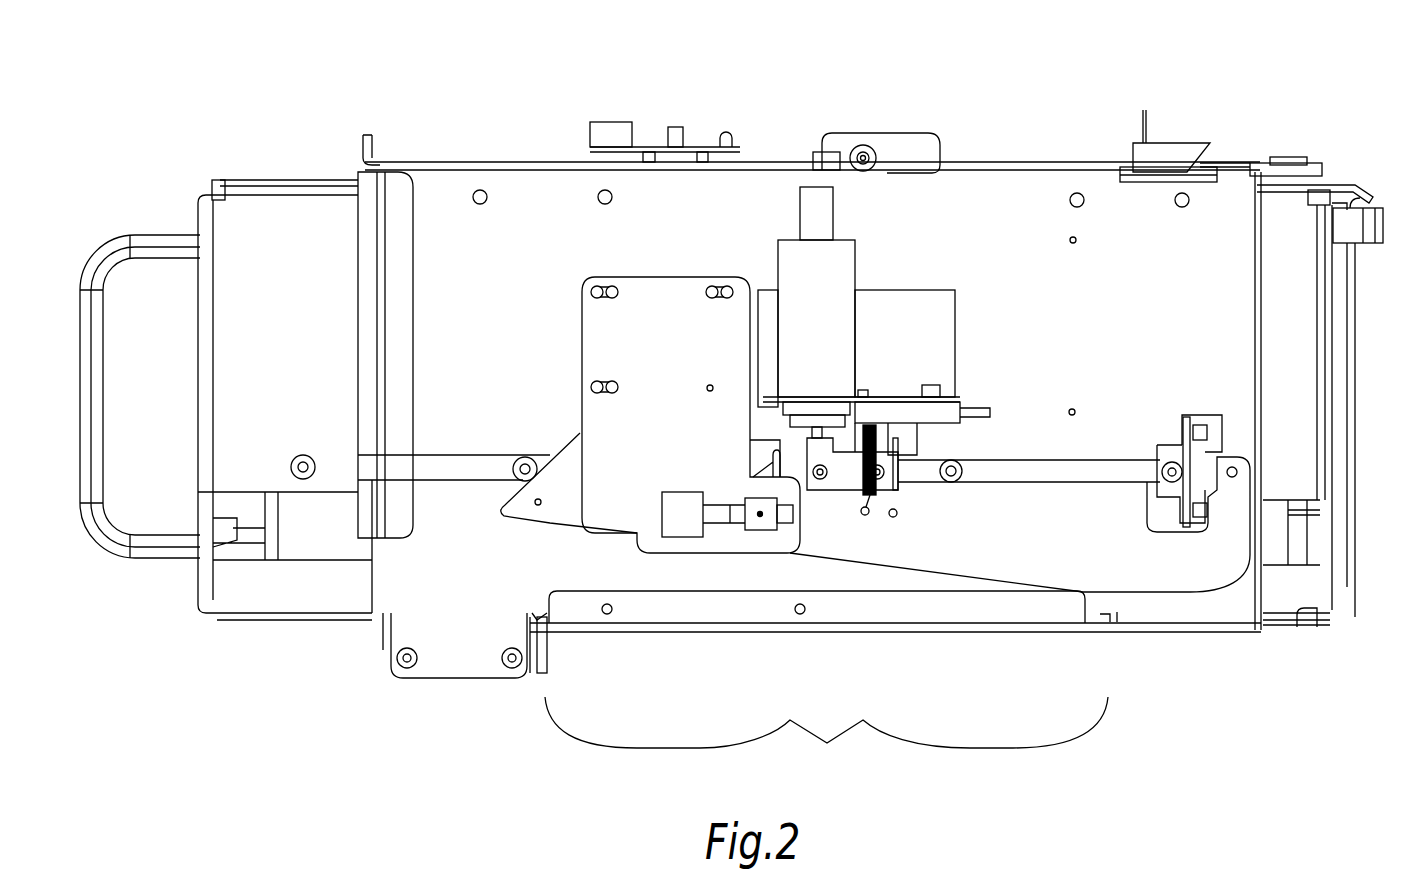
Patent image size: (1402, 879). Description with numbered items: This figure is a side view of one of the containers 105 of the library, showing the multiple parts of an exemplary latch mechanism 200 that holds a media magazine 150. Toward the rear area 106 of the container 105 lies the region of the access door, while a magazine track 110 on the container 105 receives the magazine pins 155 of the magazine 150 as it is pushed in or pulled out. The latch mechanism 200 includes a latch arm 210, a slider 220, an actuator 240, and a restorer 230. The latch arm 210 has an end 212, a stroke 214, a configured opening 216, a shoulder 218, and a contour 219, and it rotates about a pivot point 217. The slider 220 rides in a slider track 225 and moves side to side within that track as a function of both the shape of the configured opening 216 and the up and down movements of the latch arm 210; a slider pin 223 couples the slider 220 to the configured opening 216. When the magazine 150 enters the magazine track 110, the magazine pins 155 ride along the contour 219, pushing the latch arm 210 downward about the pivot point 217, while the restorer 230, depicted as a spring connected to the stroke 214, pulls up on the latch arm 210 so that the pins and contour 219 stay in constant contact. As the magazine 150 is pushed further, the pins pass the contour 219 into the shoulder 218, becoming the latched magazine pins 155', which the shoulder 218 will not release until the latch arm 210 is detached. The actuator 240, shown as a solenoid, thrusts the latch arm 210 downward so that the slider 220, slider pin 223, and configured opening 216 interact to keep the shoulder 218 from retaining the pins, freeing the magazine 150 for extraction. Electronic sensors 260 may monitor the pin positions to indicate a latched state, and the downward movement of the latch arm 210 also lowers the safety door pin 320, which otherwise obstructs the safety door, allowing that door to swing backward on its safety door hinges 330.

The container 105 is at (1238, 80).
The rear area 106 is at (372, 583).
The magazine track 110 is at (463, 470).
The media magazine 150 is at (290, 210).
The magazine pins 155 is at (396, 447).
The latched magazine pins 155' is at (1061, 449).
The latch mechanism 200 is at (826, 740).
The latch arm 210 is at (550, 527).
The end 212 is at (523, 507).
The stroke 214 is at (877, 543).
The configured opening 216 is at (773, 462).
The pivot point 217 is at (1233, 466).
The shoulder 218 is at (960, 483).
The contour 219 is at (572, 440).
The slider 220 is at (786, 524).
The slider pin 223 is at (760, 516).
The slider track 225 is at (786, 525).
The restorer 230 is at (875, 495).
The actuator 240 is at (850, 268).
The electronic sensors 260 is at (947, 413).
The safety door pin 320 is at (897, 513).
The safety door hinges 330 is at (878, 140).